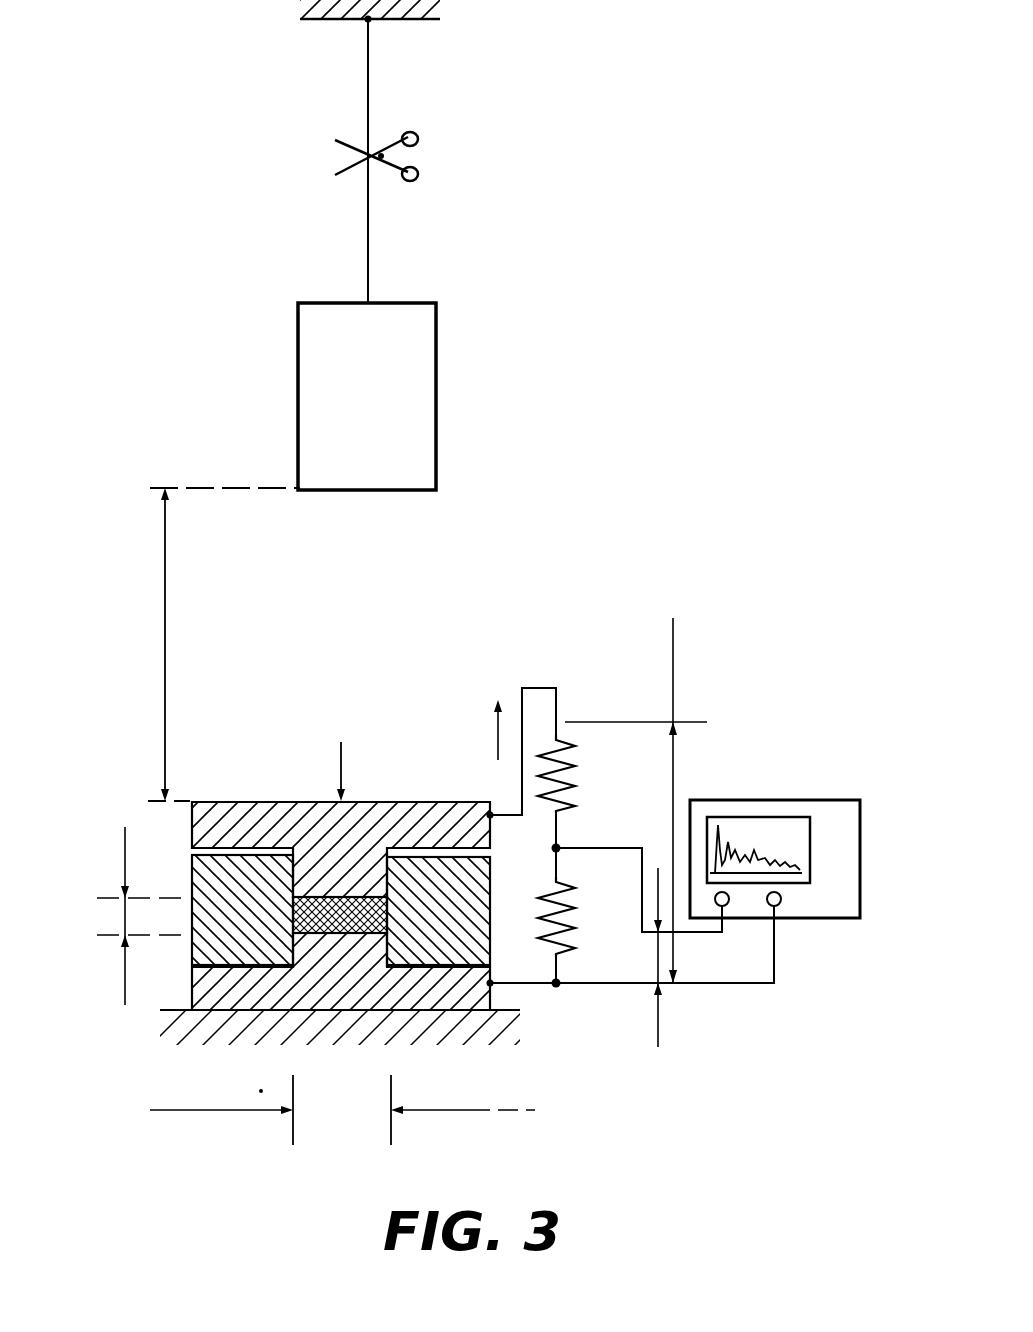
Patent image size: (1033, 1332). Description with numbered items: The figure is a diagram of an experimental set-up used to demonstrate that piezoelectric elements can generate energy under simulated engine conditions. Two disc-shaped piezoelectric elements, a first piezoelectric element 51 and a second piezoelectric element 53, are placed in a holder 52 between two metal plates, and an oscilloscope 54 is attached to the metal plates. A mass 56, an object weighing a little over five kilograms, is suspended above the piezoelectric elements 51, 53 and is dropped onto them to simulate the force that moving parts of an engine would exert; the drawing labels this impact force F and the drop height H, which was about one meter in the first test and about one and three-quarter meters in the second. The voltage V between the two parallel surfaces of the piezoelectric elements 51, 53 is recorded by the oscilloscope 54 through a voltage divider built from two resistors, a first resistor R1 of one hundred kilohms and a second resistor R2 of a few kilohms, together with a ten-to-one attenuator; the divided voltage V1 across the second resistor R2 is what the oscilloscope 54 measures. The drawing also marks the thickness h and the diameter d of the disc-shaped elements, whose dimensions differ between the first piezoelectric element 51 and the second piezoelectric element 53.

The first piezoelectric element 51 is at (240, 890).
The holder 52 is at (357, 893).
The second piezoelectric element 53 is at (437, 943).
The oscilloscope 54 is at (840, 828).
The mass 56 is at (437, 380).
The first resistor R1 is at (582, 774).
The second resistor R2 is at (582, 917).
The voltage V is at (673, 700).
The voltage V1 is at (658, 1003).
The drop height H is at (165, 642).
The sample thickness h is at (113, 917).
The sample width d is at (342, 1110).
The impact force F is at (343, 760).